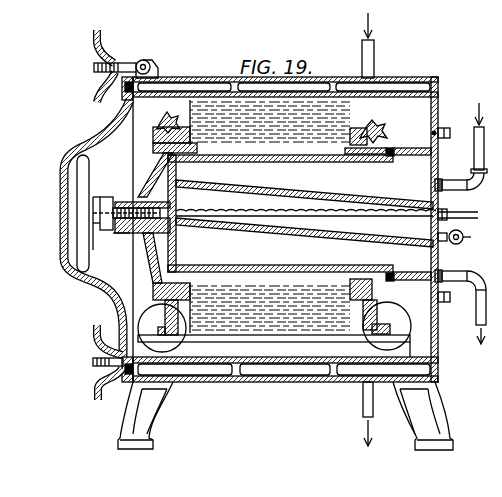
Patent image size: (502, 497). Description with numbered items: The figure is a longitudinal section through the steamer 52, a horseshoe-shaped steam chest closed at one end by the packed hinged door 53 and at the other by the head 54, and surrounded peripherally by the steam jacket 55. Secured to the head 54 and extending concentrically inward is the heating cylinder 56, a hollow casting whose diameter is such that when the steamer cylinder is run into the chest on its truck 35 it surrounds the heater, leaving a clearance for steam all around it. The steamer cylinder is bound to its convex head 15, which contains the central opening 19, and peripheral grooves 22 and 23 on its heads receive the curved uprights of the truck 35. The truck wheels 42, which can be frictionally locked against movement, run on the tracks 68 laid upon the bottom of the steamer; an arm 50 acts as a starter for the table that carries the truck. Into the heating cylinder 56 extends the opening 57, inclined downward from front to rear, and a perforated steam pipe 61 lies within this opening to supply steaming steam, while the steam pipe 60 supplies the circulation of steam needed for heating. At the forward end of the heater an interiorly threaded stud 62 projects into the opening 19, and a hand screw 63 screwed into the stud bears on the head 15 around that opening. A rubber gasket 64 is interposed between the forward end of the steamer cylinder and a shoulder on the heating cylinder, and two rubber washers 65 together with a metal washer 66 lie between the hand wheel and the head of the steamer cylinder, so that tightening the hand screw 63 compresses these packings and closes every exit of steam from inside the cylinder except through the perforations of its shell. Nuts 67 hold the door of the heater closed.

The head 15 is at (147, 257).
The central opening 19 is at (120, 236).
The groove 22 is at (169, 122).
The groove 23 is at (368, 125).
The truck 35 is at (247, 336).
The truck wheels 42 is at (274, 327).
The arm 50 is at (471, 237).
The steamer 52 is at (210, 382).
The hinged door 53 is at (62, 257).
The head 54 is at (437, 122).
The steam jacket 55 is at (282, 370).
The heating cylinder 56 is at (299, 214).
The opening 57 is at (306, 213).
The steam pipe 60 is at (478, 295).
The steam pipe 61 is at (473, 213).
The interiorly threaded stud 62 is at (147, 201).
The hand screw 63 is at (93, 198).
The rubber gasket 64 is at (391, 149).
The rubber washers 65 is at (112, 196).
The metal washer 66 is at (113, 231).
The nuts 67 is at (105, 50).
The tracks 68 is at (127, 378).